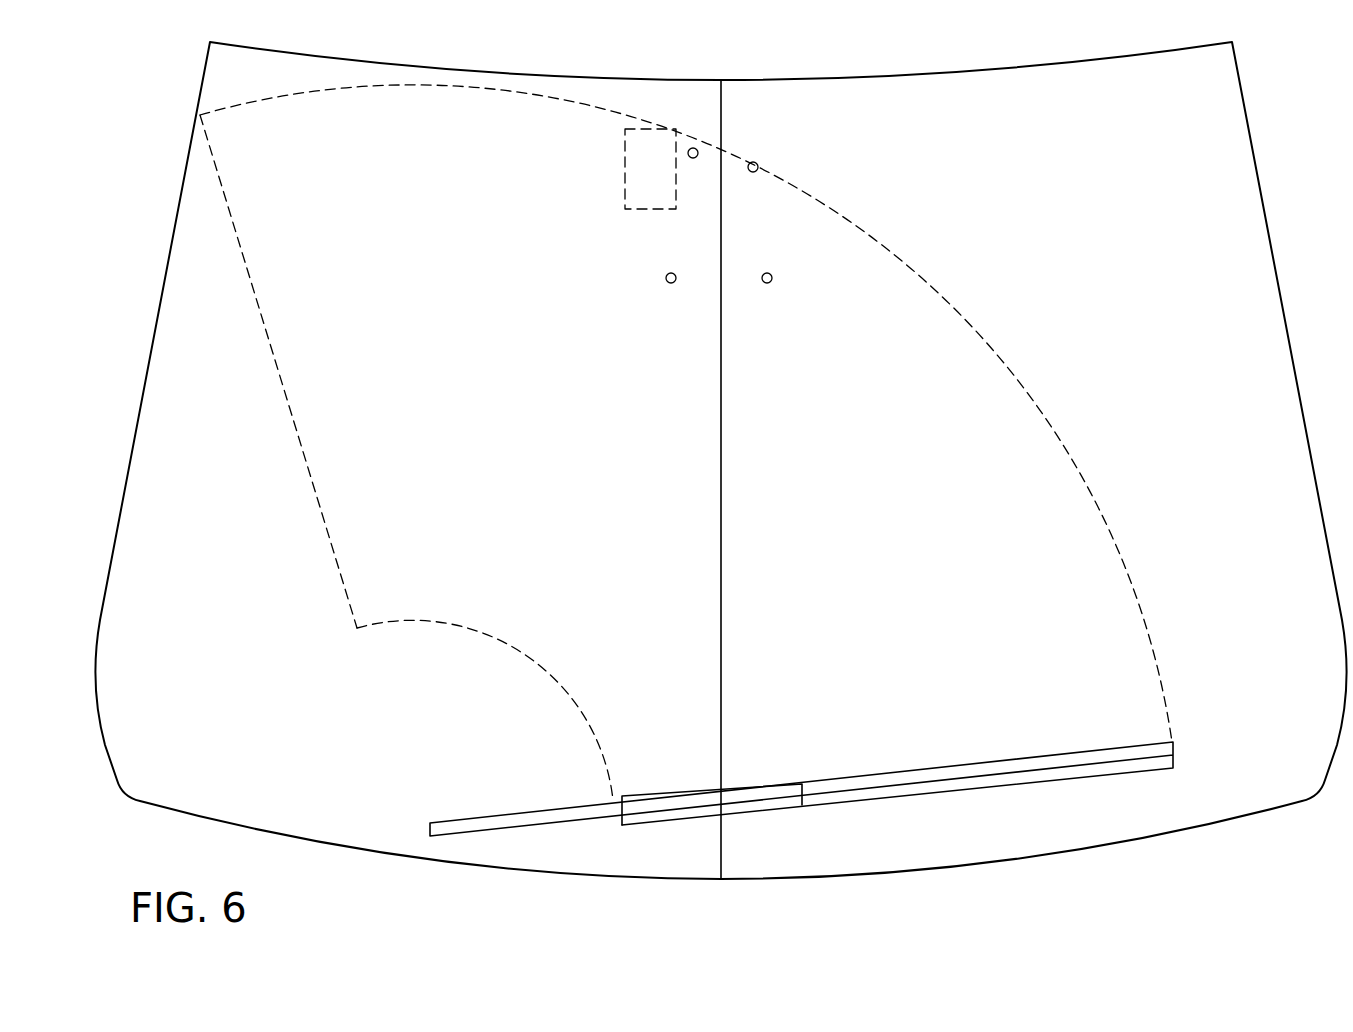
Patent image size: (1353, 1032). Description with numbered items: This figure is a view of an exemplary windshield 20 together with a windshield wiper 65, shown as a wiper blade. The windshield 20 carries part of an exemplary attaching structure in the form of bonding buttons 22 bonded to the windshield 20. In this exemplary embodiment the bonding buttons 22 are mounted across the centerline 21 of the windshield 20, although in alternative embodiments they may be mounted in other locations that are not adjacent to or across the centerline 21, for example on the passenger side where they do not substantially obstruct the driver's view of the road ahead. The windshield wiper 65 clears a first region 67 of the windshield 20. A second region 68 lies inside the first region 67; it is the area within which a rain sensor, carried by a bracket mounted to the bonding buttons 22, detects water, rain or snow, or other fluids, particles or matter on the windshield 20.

The windshield 20 is at (1262, 207).
The centerline 21 is at (722, 462).
The bonding buttons 22 is at (695, 148).
The windshield wiper 65 is at (672, 810).
The first region 67 is at (1124, 560).
The second region 68 is at (650, 136).